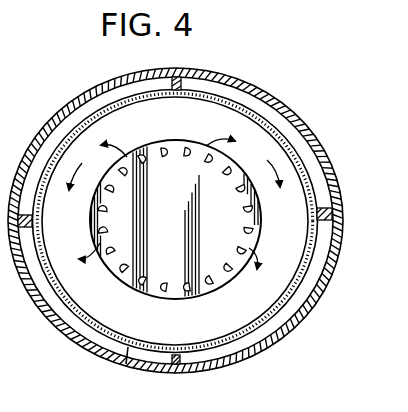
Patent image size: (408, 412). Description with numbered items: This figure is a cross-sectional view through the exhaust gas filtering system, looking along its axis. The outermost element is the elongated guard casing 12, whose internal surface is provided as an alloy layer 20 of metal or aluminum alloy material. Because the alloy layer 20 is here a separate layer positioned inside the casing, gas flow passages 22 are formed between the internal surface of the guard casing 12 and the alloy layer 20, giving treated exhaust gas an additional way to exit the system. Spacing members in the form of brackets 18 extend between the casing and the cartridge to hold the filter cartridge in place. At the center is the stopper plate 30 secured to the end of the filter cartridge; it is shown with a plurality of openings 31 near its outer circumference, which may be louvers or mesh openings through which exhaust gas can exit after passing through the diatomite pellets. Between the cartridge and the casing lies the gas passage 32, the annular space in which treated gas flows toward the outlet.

The guard casing 12 is at (267, 88).
The bracket 18 is at (178, 79).
The alloy layer 20 is at (127, 363).
The gas flow passages 22 is at (277, 114).
The stopper plate 30 is at (183, 208).
The openings 31 is at (142, 287).
The gas passage 32 is at (194, 128).